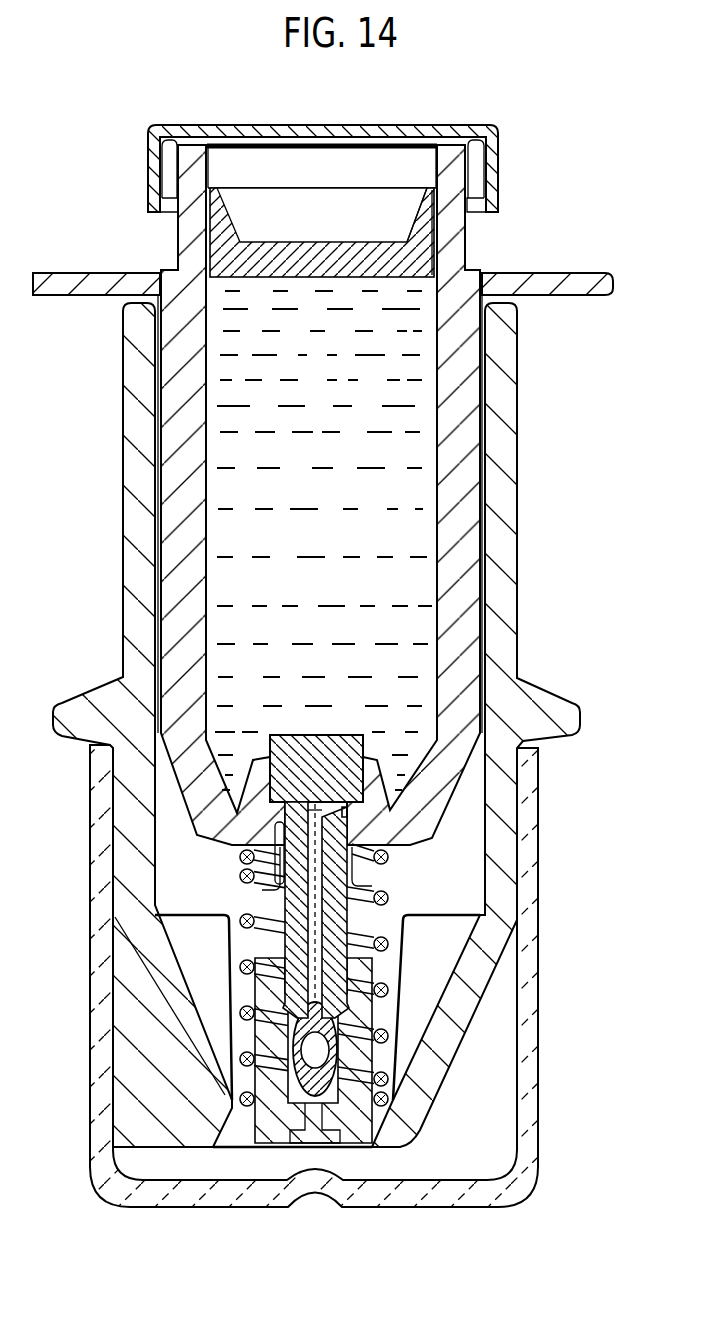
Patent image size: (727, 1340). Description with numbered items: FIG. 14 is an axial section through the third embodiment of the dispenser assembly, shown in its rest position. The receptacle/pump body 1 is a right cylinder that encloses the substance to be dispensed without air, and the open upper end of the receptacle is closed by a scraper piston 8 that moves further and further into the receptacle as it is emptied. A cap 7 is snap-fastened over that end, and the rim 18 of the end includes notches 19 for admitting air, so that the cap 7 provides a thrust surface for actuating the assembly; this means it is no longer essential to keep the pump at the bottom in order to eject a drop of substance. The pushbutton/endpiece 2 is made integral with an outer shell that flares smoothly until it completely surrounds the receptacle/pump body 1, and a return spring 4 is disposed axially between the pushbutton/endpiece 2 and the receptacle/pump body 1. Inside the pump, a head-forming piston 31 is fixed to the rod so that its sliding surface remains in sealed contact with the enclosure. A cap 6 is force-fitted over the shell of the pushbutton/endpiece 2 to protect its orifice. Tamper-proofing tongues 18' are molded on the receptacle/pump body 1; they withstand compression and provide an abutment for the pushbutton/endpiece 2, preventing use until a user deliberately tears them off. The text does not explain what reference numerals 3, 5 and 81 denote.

The receptacle/pump body 1 is at (465, 512).
The pushbutton/endpiece 2 is at (467, 992).
The plug 3 is at (288, 756).
The head-forming piston 31 is at (338, 753).
The return spring 4 is at (390, 890).
The valve ball 5 is at (300, 1100).
The cap 6 is at (527, 1127).
The cap 7 is at (418, 127).
The scraper piston 8 is at (272, 256).
The stopper inner wall 81 is at (442, 227).
The rim 18 is at (108, 436).
The tamper-proofing tongues 18' is at (548, 476).
The notches 19 is at (480, 167).